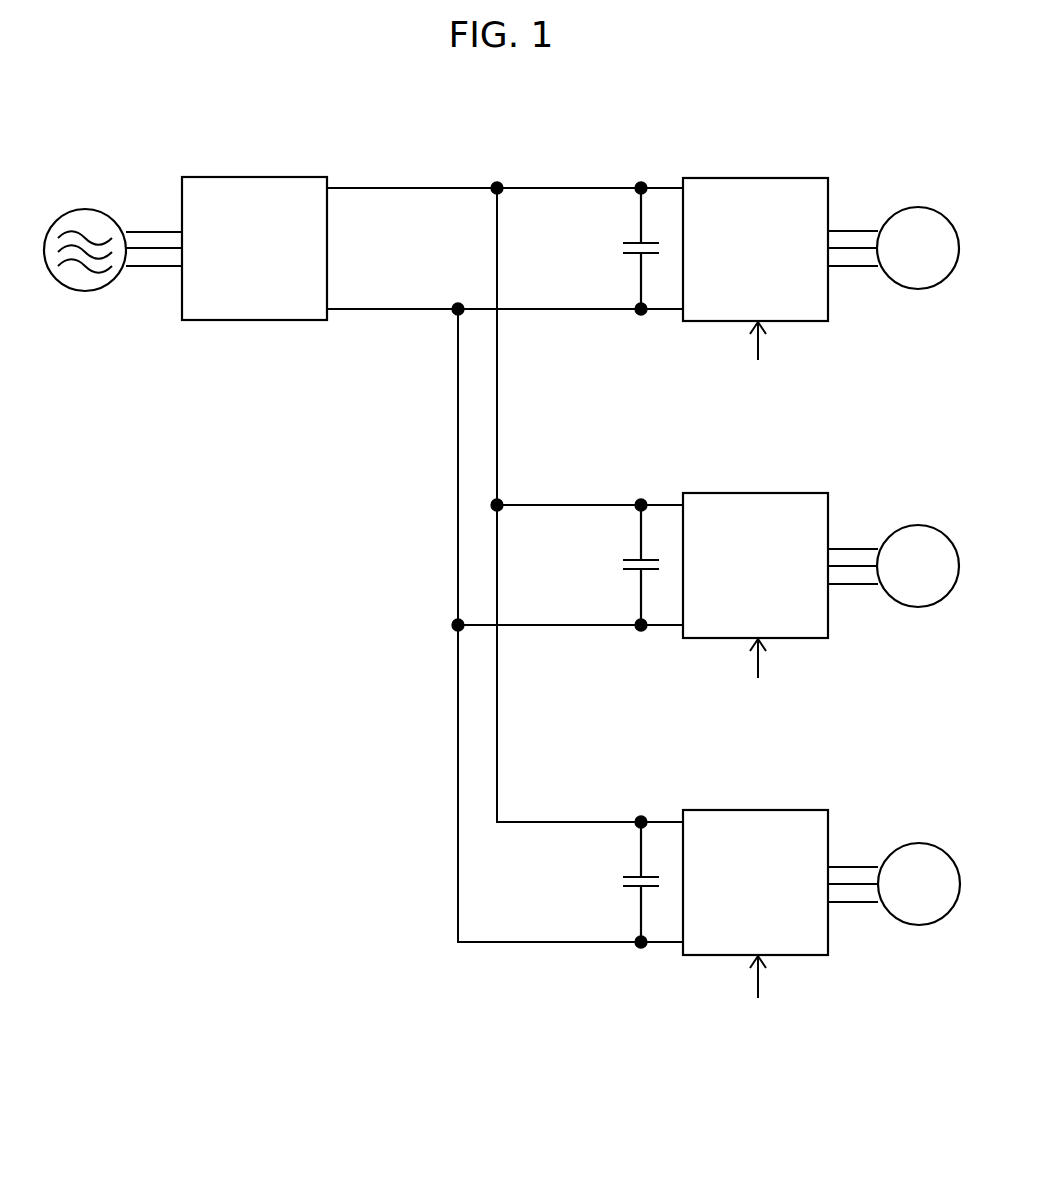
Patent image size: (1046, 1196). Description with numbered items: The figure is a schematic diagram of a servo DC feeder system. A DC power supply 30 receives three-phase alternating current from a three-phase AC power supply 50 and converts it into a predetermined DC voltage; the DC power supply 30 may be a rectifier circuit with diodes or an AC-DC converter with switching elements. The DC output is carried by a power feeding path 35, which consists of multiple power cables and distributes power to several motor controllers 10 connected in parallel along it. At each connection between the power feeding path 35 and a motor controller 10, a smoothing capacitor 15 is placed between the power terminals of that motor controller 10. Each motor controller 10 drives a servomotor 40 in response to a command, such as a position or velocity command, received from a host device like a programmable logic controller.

The motor controller 10 is at (793, 176).
The smoothing capacitor 15 is at (623, 256).
The DC power supply 30 is at (258, 177).
The power feeding path 35 is at (675, 150).
The servomotor 40 is at (917, 207).
The three-phase AC power supply 50 is at (90, 208).